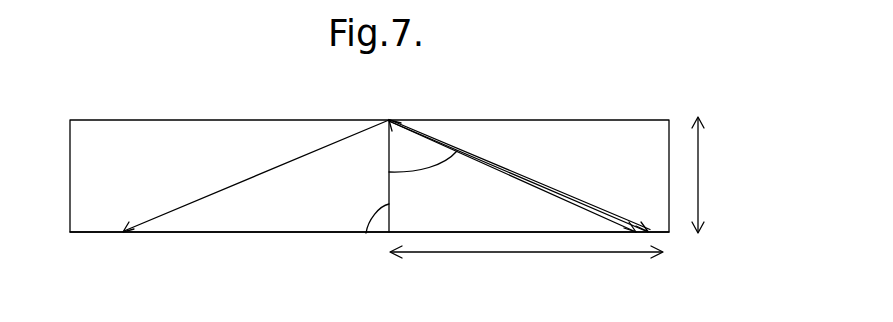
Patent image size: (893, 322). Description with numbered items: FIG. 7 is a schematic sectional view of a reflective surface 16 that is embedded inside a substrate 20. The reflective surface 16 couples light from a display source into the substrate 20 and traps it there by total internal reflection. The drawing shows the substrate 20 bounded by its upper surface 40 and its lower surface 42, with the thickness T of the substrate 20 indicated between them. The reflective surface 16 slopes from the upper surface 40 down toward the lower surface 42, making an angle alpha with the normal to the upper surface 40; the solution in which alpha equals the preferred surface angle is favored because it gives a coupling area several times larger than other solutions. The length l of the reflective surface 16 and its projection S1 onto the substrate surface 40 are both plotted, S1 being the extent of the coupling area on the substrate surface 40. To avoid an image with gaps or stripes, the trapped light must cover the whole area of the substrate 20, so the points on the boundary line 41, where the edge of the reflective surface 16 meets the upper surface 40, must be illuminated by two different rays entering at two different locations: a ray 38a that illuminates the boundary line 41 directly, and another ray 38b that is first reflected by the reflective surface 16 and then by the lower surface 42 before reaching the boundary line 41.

The substrate 20 is at (652, 139).
The upper surface of the substrate 40 is at (290, 119).
The boundary line 41 is at (389, 119).
The reflective surface 16 is at (589, 197).
The path length of beam l is at (551, 180).
The angle alpha is at (423, 163).
The lower surface of the substrate 42 is at (283, 233).
The ray 38a is at (366, 233).
The ray 38b is at (641, 233).
The thickness of plate T is at (705, 175).
The projection of the reflecting surface S1 is at (526, 264).